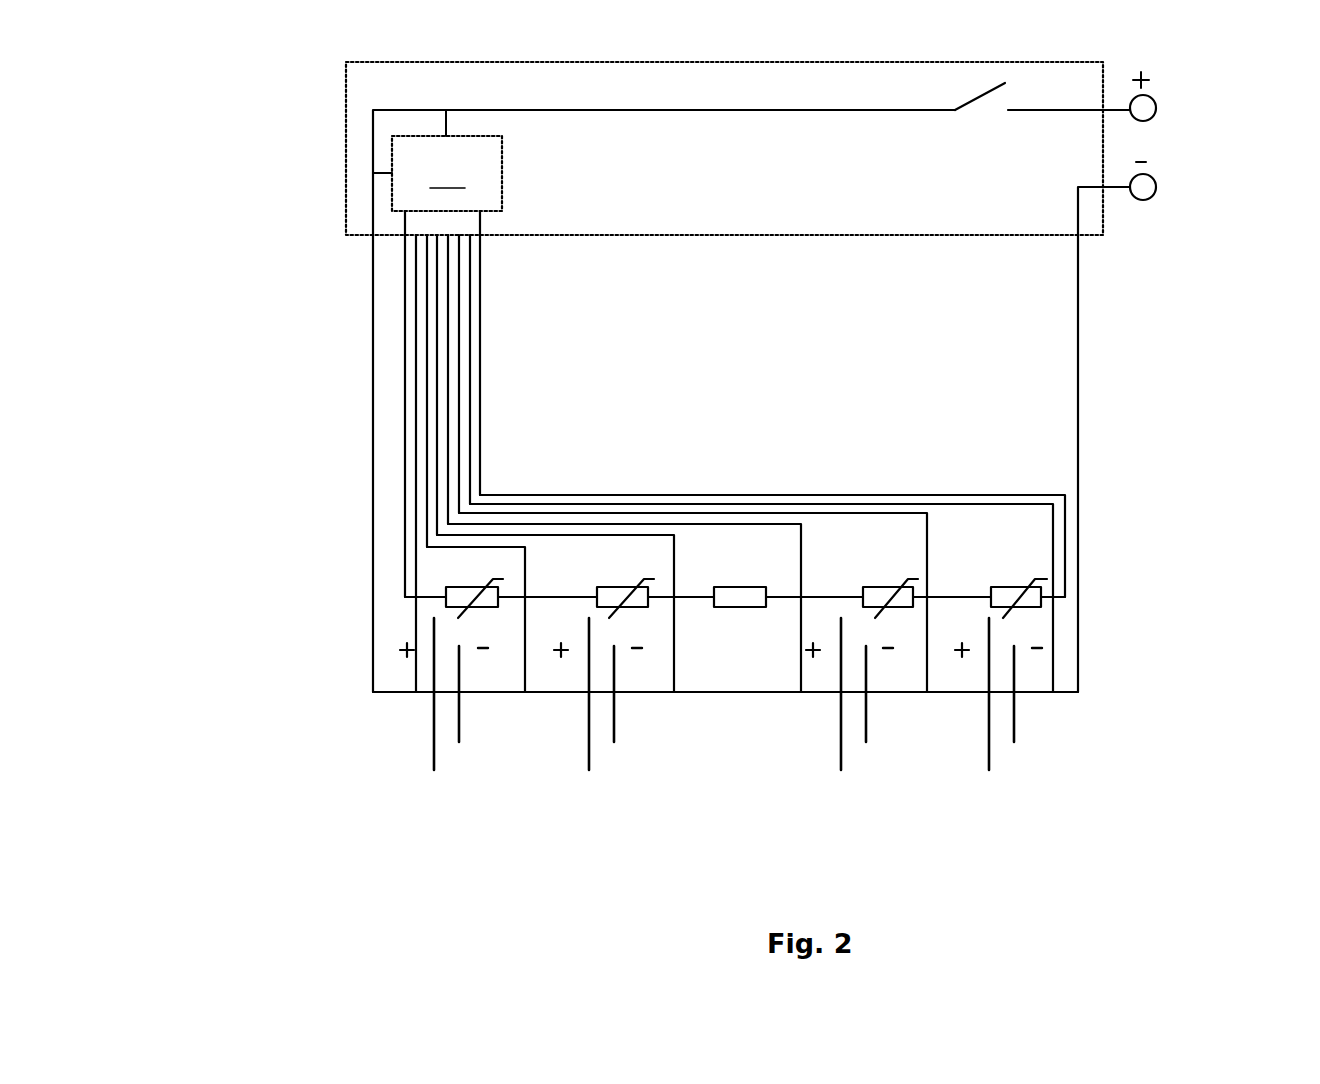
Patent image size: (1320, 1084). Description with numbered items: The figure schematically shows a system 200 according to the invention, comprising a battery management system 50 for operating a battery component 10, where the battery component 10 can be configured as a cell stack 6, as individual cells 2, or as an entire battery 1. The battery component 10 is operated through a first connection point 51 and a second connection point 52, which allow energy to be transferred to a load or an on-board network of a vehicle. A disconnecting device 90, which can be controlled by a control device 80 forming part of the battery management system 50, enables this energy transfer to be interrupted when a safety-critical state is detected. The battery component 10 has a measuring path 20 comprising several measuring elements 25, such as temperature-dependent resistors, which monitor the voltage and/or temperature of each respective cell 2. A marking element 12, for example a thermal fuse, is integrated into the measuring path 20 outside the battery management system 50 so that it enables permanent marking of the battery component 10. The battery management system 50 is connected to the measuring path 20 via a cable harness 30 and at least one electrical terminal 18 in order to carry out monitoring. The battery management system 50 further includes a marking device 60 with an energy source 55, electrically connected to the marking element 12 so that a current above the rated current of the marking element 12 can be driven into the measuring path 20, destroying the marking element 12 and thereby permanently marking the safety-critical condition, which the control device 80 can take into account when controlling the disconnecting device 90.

The system 200 is at (228, 120).
The battery management system 50 is at (1103, 215).
The marking device 60 is at (418, 133).
The energy source 55 is at (447, 173).
The disconnecting device 90 is at (1032, 88).
The control device 80 is at (980, 96).
The first connection point 51 is at (1155, 118).
The second connection point 52 is at (1155, 197).
The battery 1 is at (337, 654).
The electrical terminal 18 is at (490, 256).
The cable harness 30 is at (487, 436).
The measuring path 20 is at (983, 494).
The measuring element 25 is at (590, 578).
The marking element 12 is at (742, 607).
The cell stack 6 is at (1120, 573).
The battery component 10 is at (749, 731).
The cell 2 is at (475, 757).